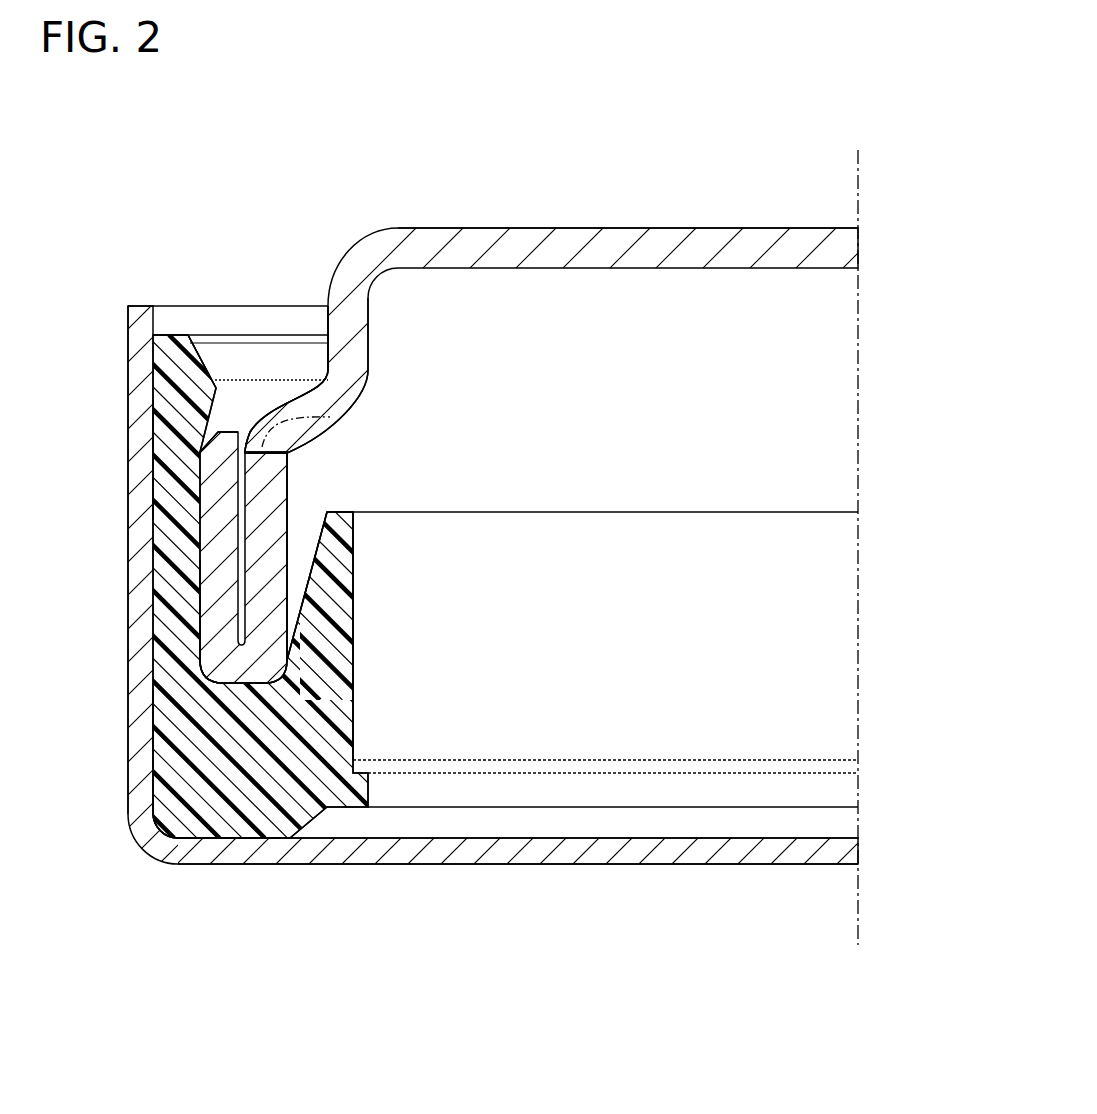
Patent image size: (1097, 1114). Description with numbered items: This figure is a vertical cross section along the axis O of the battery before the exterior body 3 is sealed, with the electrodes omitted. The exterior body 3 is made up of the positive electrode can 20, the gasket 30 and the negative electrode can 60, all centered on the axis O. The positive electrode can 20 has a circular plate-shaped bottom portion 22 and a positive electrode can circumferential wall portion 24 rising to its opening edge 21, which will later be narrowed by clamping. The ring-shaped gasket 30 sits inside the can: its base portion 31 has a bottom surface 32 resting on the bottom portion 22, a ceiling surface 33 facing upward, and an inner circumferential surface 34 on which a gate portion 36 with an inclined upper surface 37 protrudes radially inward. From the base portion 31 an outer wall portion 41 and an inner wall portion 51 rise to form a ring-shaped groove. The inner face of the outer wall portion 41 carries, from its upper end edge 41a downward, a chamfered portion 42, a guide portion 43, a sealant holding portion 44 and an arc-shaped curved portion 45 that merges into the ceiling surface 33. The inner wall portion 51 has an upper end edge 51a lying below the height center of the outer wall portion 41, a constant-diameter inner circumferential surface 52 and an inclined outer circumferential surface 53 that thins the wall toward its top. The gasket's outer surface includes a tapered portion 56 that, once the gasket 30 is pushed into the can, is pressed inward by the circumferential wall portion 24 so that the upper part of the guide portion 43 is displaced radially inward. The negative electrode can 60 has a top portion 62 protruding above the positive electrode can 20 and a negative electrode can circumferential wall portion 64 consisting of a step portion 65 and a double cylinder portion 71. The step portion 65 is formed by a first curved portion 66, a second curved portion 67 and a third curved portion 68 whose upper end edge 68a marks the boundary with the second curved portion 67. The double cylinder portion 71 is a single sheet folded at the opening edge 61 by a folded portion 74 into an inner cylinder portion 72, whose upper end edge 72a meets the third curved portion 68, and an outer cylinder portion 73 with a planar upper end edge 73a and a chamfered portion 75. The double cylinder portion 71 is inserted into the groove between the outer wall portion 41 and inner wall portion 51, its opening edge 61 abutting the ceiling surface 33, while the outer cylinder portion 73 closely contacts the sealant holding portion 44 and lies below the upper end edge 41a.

The exterior body 3 is at (448, 593).
The positive electrode can 20 is at (689, 872).
The opening edge 21 is at (145, 306).
The bottom portion 22 is at (604, 852).
The positive electrode can circumferential wall portion 24 is at (140, 500).
The gasket 30 is at (148, 832).
The base portion 31 is at (238, 805).
The bottom surface 32 is at (190, 850).
The ceiling surface 33 is at (235, 662).
The inner circumferential surface 34 is at (318, 820).
The gate portion 36 is at (384, 806).
The upper surface 37 is at (362, 760).
The outer wall portion 41 is at (190, 632).
The upper end edge 41a is at (167, 335).
The chamfered portion 42 is at (205, 440).
The guide portion 43 is at (222, 398).
The sealant holding portion 44 is at (198, 600).
The curved portion 45 is at (205, 662).
The inner wall portion 51 is at (347, 608).
The upper end edge 51a is at (345, 512).
The inner circumferential surface 52 is at (354, 566).
The outer circumferential surface 53 is at (312, 598).
The tapered portion 56 is at (153, 462).
The negative electrode can 60 is at (689, 220).
The opening edge 61 is at (245, 665).
The top portion 62 is at (605, 238).
The negative electrode can circumferential wall portion 64 is at (294, 271).
The step portion 65 is at (375, 147).
The first curved portion 66 is at (352, 243).
The second curved portion 67 is at (300, 405).
The third curved portion 68 is at (250, 440).
The upper end edge 68a is at (272, 413).
The double cylinder portion 71 is at (297, 476).
The inner cylinder portion 72 is at (258, 520).
The upper end edge 72a is at (330, 417).
The outer cylinder portion 73 is at (212, 565).
The upper end edge 73a is at (222, 432).
The folded portion 74 is at (280, 680).
The chamfered portion 75 is at (205, 448).
The axis O is at (855, 185).